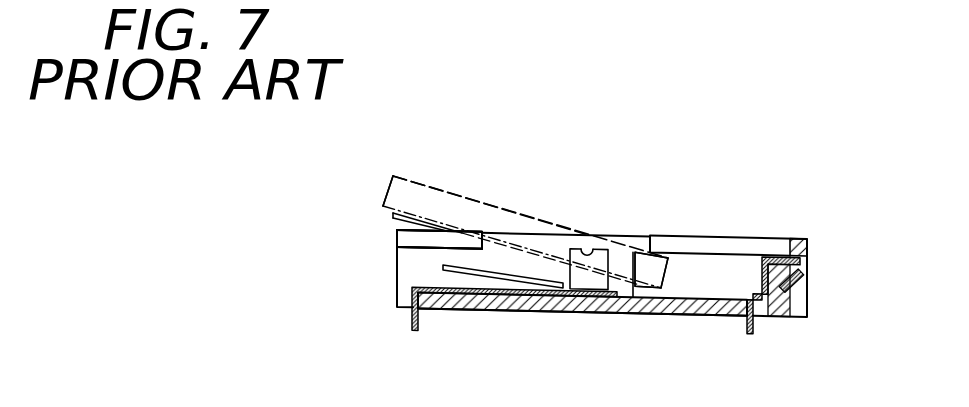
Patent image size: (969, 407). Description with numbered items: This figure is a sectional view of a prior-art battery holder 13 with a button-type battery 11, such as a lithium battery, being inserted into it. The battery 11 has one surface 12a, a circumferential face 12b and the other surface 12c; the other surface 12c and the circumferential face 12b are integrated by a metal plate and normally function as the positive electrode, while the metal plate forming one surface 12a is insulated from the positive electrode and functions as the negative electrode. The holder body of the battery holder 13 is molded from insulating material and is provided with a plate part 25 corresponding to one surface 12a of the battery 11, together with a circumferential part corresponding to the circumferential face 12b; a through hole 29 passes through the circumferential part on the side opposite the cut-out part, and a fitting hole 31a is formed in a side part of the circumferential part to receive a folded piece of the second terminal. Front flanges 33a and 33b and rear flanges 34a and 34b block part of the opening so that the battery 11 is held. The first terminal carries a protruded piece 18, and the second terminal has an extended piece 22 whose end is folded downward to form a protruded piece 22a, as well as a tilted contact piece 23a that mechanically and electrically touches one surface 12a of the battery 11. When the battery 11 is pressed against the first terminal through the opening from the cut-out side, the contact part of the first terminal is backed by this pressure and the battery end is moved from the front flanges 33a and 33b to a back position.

The button-type battery 11 is at (443, 183).
The one surface 12a is at (527, 265).
The circumferential face 12b is at (388, 188).
The other surface 12c is at (499, 203).
The battery holder 13 is at (672, 317).
The protruded piece 18 is at (749, 337).
The extended piece 22 is at (402, 283).
The protruded piece 22a is at (411, 322).
The contact piece 23a is at (442, 267).
The plate part 25 is at (594, 315).
The through hole 29 is at (808, 258).
The fitting hole 31a is at (593, 247).
The front flange 33a is at (412, 248).
The front flange 33b is at (412, 248).
The rear flange 34a is at (664, 237).
The rear flange 34b is at (664, 237).